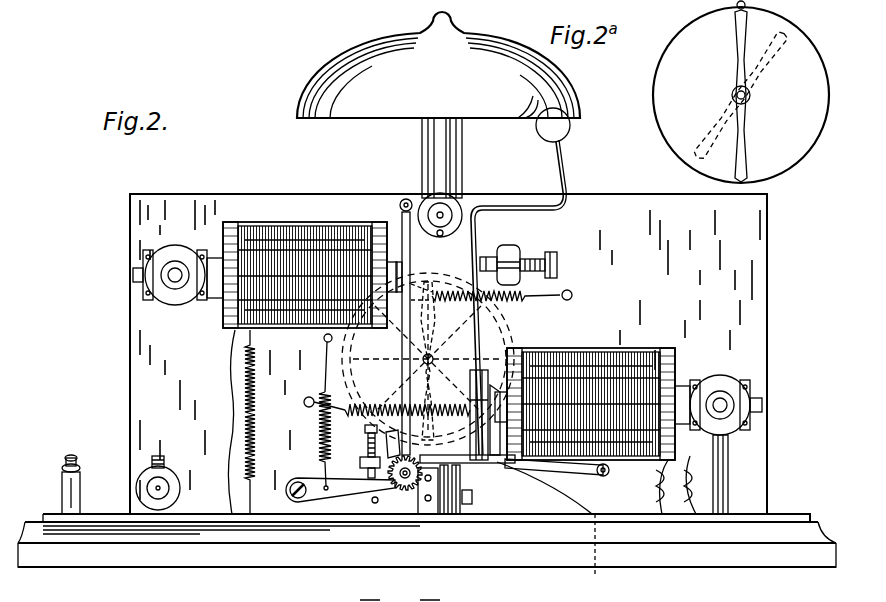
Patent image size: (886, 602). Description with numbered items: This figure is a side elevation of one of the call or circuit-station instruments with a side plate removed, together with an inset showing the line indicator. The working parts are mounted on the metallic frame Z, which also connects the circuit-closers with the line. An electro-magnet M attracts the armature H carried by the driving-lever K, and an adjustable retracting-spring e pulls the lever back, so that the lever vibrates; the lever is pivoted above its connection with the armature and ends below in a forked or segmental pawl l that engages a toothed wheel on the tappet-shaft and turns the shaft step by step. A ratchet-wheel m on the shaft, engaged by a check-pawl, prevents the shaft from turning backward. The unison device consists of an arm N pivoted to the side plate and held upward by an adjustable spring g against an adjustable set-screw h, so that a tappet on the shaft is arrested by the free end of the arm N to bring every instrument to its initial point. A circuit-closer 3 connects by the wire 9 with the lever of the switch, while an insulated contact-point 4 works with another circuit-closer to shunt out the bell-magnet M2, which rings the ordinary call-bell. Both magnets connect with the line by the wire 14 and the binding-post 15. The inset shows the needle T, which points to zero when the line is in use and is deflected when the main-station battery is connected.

In FIG. 2, the metallic frame Z is at (448, 354).
In FIG. 2, the electro-magnet M is at (310, 265).
In FIG. 2, the bell-magnet M2 is at (585, 394).
In FIG. 2, the armature H is at (414, 327).
In FIG. 2, the adjustable retracting-spring e is at (491, 281).
In FIG. 2, the lever K is at (428, 359).
In FIG. 2, the adjustable spring g is at (387, 412).
In FIG. 2, the adjustable set-screw h is at (364, 451).
In FIG. 2, the forked or segmental pawl l is at (392, 444).
In FIG. 2, the ratchet-wheel m is at (405, 472).
In FIG. 2, the arm N is at (340, 490).
In FIG. 2, the circuit-closer 3 is at (539, 423).
In FIG. 2, the insulated contact-point 4 is at (466, 484).
In FIG. 2, the wire 9 is at (551, 528).
In FIG. 2, the wire 14 is at (462, 422).
In FIG. 2, the binding-post 15 is at (81, 484).
In FIG. 2A, the needle T is at (740, 96).